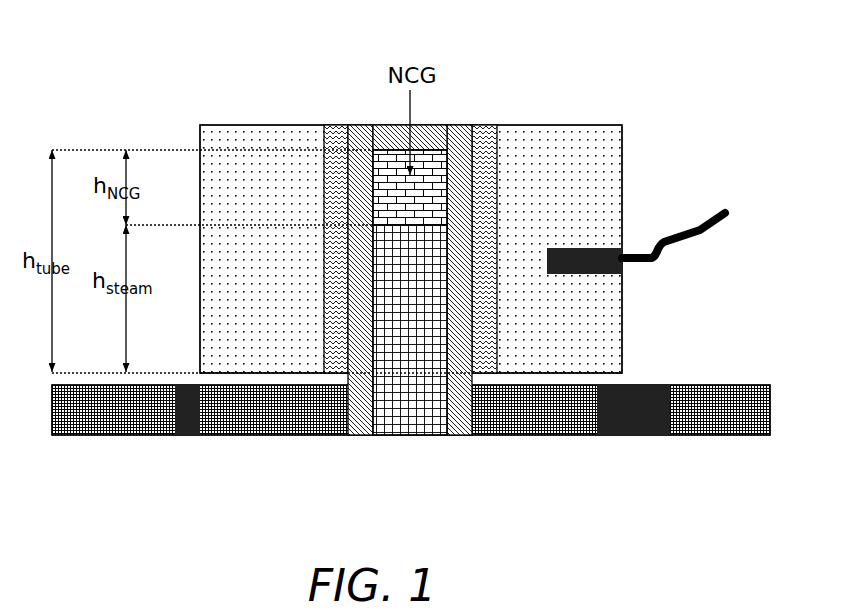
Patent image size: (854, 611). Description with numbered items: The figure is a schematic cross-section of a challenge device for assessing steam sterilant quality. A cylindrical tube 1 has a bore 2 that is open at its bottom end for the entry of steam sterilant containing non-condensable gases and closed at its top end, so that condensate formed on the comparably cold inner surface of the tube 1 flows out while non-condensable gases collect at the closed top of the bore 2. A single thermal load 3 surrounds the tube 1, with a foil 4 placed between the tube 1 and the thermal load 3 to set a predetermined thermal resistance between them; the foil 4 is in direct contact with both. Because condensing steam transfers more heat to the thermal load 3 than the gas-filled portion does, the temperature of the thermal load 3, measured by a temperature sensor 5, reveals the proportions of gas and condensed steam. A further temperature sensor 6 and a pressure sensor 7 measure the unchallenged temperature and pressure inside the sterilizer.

The tube 1 is at (462, 422).
The bore 2 is at (397, 422).
The thermal load 3 is at (268, 142).
The foil 4 is at (486, 324).
The temperature sensor 5 is at (627, 277).
The temperature sensor 6 is at (180, 441).
The pressure sensor 7 is at (640, 441).